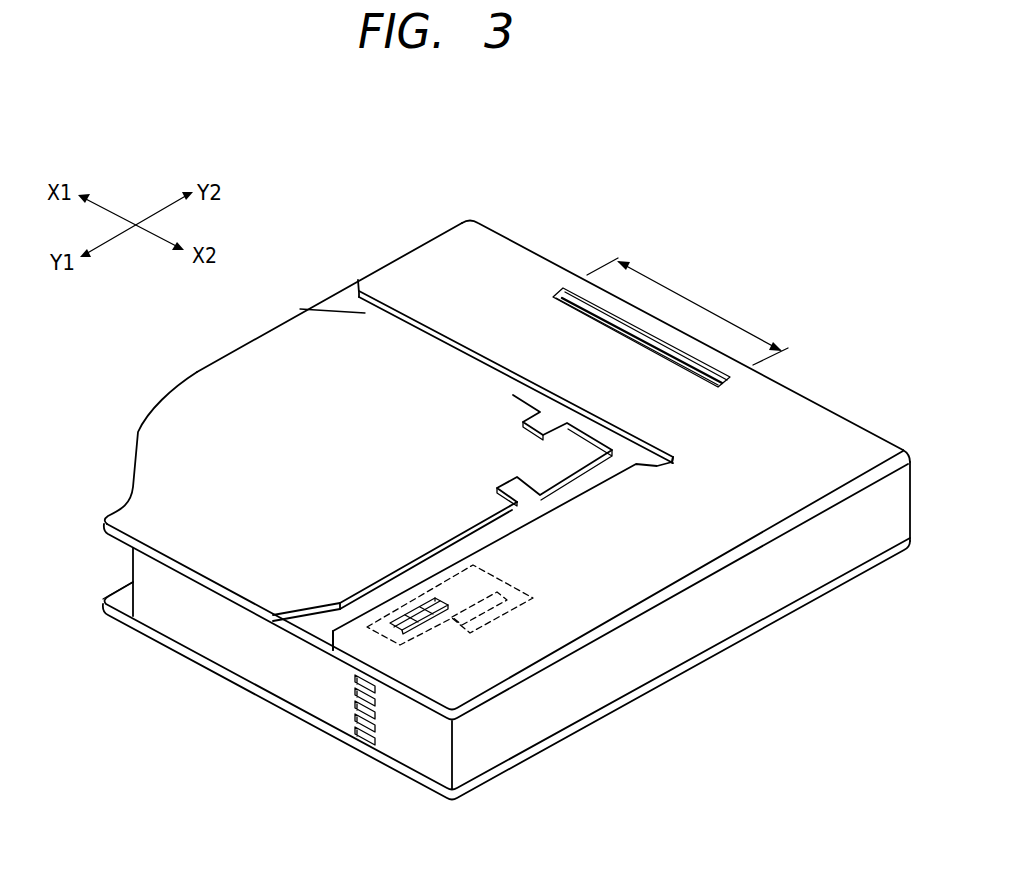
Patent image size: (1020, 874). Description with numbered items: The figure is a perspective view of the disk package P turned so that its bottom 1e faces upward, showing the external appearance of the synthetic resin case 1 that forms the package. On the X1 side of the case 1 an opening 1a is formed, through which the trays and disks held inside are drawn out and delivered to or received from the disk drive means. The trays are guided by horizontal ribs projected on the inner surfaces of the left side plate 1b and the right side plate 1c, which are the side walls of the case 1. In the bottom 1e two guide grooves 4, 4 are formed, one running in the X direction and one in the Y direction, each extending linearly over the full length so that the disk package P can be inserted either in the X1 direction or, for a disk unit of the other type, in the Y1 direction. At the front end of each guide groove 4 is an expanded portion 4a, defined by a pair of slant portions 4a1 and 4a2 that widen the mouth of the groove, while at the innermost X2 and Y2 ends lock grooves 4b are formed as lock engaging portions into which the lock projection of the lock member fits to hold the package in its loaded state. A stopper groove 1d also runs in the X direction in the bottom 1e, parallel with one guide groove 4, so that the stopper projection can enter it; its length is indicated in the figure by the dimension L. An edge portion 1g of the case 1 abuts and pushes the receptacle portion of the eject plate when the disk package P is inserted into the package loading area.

The case 1 is at (813, 398).
The opening 1a is at (122, 566).
The left side plate 1b is at (848, 447).
The right side plate 1c is at (157, 618).
The stopper groove 1d is at (572, 296).
The bottom 1e is at (672, 562).
The edge portion 1g is at (197, 372).
The guide groove 4 is at (458, 356).
The expanded portion 4a is at (337, 297).
The slant portion 4a1 is at (357, 310).
The slant portion 4a2 is at (358, 280).
The lock groove 4b is at (541, 428).
The disk package P is at (518, 234).
The slot length L is at (687, 311).